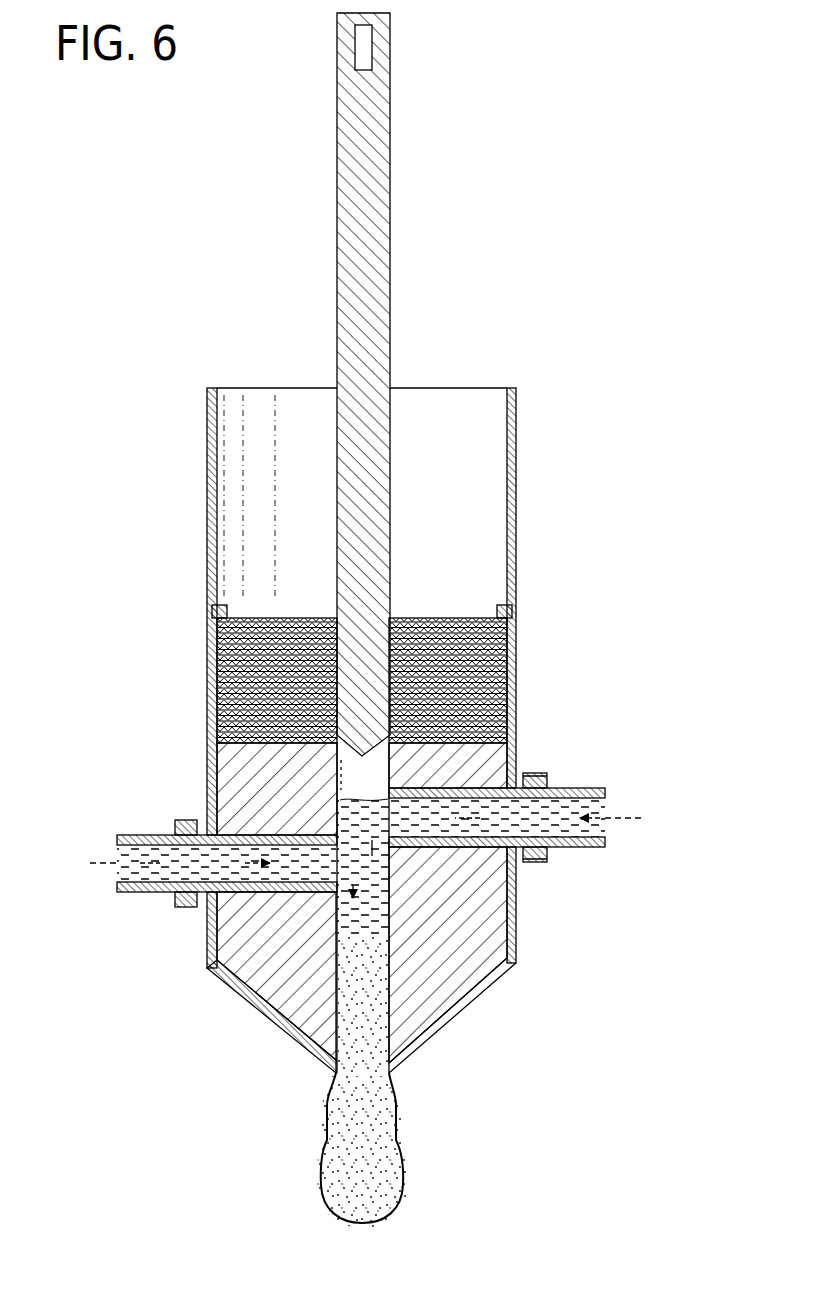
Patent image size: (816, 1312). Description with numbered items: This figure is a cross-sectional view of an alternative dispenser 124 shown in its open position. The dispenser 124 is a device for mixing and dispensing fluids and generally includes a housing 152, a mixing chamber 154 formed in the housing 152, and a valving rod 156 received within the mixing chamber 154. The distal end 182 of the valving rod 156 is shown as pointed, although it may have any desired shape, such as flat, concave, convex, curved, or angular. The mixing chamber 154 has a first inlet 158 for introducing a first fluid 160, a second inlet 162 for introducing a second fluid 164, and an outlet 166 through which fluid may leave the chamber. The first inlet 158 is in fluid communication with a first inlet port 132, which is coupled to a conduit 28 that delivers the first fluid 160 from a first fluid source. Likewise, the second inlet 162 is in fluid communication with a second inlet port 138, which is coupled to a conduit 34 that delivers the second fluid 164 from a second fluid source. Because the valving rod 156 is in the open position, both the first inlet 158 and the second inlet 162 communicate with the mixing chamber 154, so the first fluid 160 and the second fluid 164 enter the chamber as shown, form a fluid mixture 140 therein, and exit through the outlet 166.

The dispenser 124 is at (584, 254).
The housing 152 is at (516, 499).
The valving rod 156 is at (337, 218).
The distal end 182 is at (363, 735).
The second inlet 162 is at (348, 882).
The second inlet port 138 is at (222, 884).
The outlet 166 is at (396, 1084).
The conduit 34 is at (133, 835).
The second fluid 164 is at (137, 872).
The conduit 28 is at (595, 790).
The first fluid 160 is at (575, 826).
The first inlet port 132 is at (518, 798).
The first inlet 158 is at (388, 818).
The mixing chamber 154 is at (368, 771).
The fluid mixture 140 is at (358, 1168).